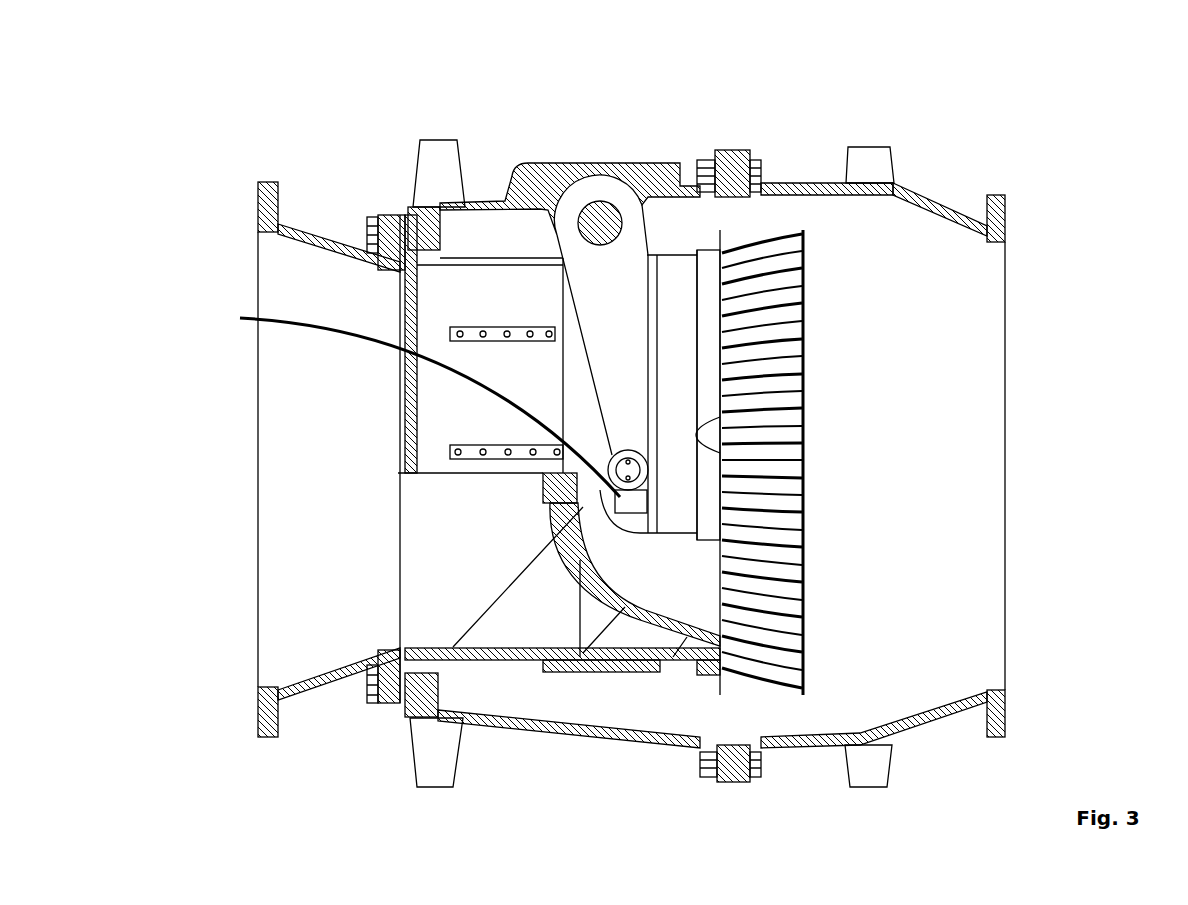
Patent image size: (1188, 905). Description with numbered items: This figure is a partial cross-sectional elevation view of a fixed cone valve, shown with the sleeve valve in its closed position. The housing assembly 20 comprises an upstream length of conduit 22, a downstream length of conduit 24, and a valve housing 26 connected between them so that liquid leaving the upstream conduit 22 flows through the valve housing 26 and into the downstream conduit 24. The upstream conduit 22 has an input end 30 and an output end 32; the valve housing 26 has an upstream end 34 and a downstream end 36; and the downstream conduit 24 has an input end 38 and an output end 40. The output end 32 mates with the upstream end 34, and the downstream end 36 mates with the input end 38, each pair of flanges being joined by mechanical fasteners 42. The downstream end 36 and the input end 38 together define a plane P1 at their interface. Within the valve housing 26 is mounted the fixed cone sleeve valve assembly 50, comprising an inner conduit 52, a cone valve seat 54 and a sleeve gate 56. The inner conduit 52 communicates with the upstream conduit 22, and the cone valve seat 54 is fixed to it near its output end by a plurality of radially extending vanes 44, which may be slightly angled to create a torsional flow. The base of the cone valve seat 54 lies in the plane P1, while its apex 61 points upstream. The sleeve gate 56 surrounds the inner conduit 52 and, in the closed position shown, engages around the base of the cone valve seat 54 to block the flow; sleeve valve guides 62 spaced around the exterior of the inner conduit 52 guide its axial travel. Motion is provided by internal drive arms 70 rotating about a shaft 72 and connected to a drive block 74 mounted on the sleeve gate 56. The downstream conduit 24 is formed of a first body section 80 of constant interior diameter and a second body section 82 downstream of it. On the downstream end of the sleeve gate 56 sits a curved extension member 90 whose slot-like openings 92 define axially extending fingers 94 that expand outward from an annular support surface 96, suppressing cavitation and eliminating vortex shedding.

The housing assembly 20 is at (948, 132).
The upstream length of conduit 22 is at (316, 697).
The downstream length of conduit 24 is at (913, 739).
The valve housing 26 is at (621, 748).
The input end 30 is at (258, 262).
The output end 32 is at (393, 270).
The upstream end 34 is at (398, 650).
The downstream end 36 is at (670, 185).
The input end 38 is at (776, 185).
The output end 40 is at (1005, 250).
The mechanical fasteners 42 is at (373, 215).
The radially extending vanes 44 is at (497, 603).
The fixed cone sleeve valve assembly 50 is at (825, 234).
The inner conduit 52 is at (493, 295).
The cone valve seat 54 is at (573, 672).
The sleeve gate 56 is at (648, 185).
The apex 61 is at (543, 493).
The sleeve valve guides 62 is at (520, 325).
The internal drive arms 70 is at (602, 369).
The shaft 72 is at (597, 200).
The drive block 74 is at (240, 318).
The first body section 80 is at (793, 740).
The second body section 82 is at (923, 707).
The curved extension member 90 is at (812, 259).
The openings 92 is at (803, 360).
The fingers 94 is at (803, 455).
The annular support surface 96 is at (722, 458).
The plane P1 is at (736, 840).